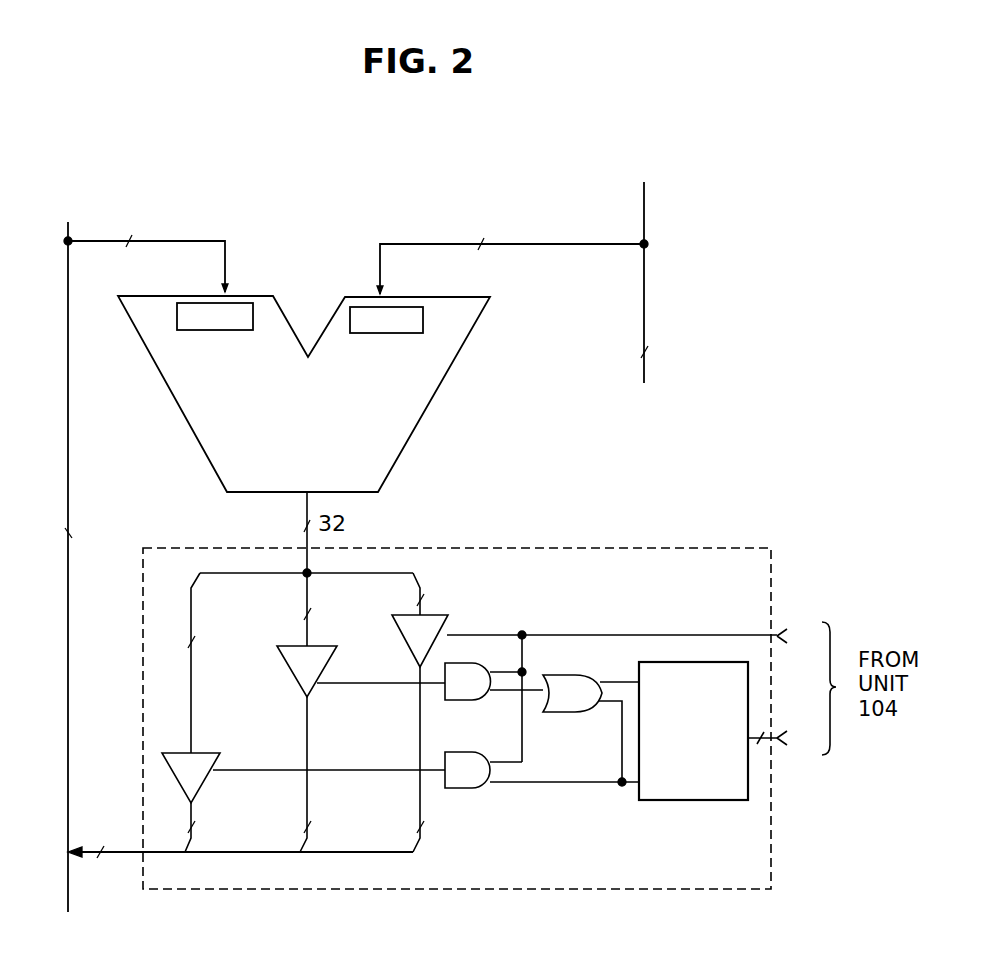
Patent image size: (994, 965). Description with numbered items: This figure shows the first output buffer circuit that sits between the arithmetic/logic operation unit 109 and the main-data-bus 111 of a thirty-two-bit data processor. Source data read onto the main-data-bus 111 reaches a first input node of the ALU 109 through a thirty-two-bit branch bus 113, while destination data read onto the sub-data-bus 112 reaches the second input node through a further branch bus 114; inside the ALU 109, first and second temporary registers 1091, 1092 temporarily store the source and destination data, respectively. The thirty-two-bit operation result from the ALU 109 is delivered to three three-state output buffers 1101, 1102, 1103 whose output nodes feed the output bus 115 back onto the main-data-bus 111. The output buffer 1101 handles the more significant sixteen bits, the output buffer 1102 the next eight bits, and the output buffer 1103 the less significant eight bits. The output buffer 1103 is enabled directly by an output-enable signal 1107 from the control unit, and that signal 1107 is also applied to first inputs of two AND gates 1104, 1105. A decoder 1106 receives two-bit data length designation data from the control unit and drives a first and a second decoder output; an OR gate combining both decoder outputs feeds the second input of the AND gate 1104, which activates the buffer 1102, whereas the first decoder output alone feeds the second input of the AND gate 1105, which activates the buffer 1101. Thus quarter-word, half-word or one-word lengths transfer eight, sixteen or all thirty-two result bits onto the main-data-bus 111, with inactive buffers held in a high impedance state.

The arithmetic/logic operation unit 109 is at (407, 428).
The first temporary register 1091 is at (197, 330).
The second temporary register 1092 is at (356, 333).
The main-data-bus 111 is at (68, 493).
The sub-data-bus 112 is at (672, 312).
The branch bus 113 is at (157, 241).
The input bus 114 is at (416, 244).
The output bus 115 is at (119, 852).
The three-state output buffer 1101 is at (195, 797).
The three-state output buffer 1102 is at (285, 665).
The three-state output buffer 1103 is at (393, 627).
The AND gate 1104 is at (455, 700).
The AND gate 1105 is at (455, 788).
The decoder 1106 is at (553, 708).
The output-enable signal 1107 is at (652, 695).